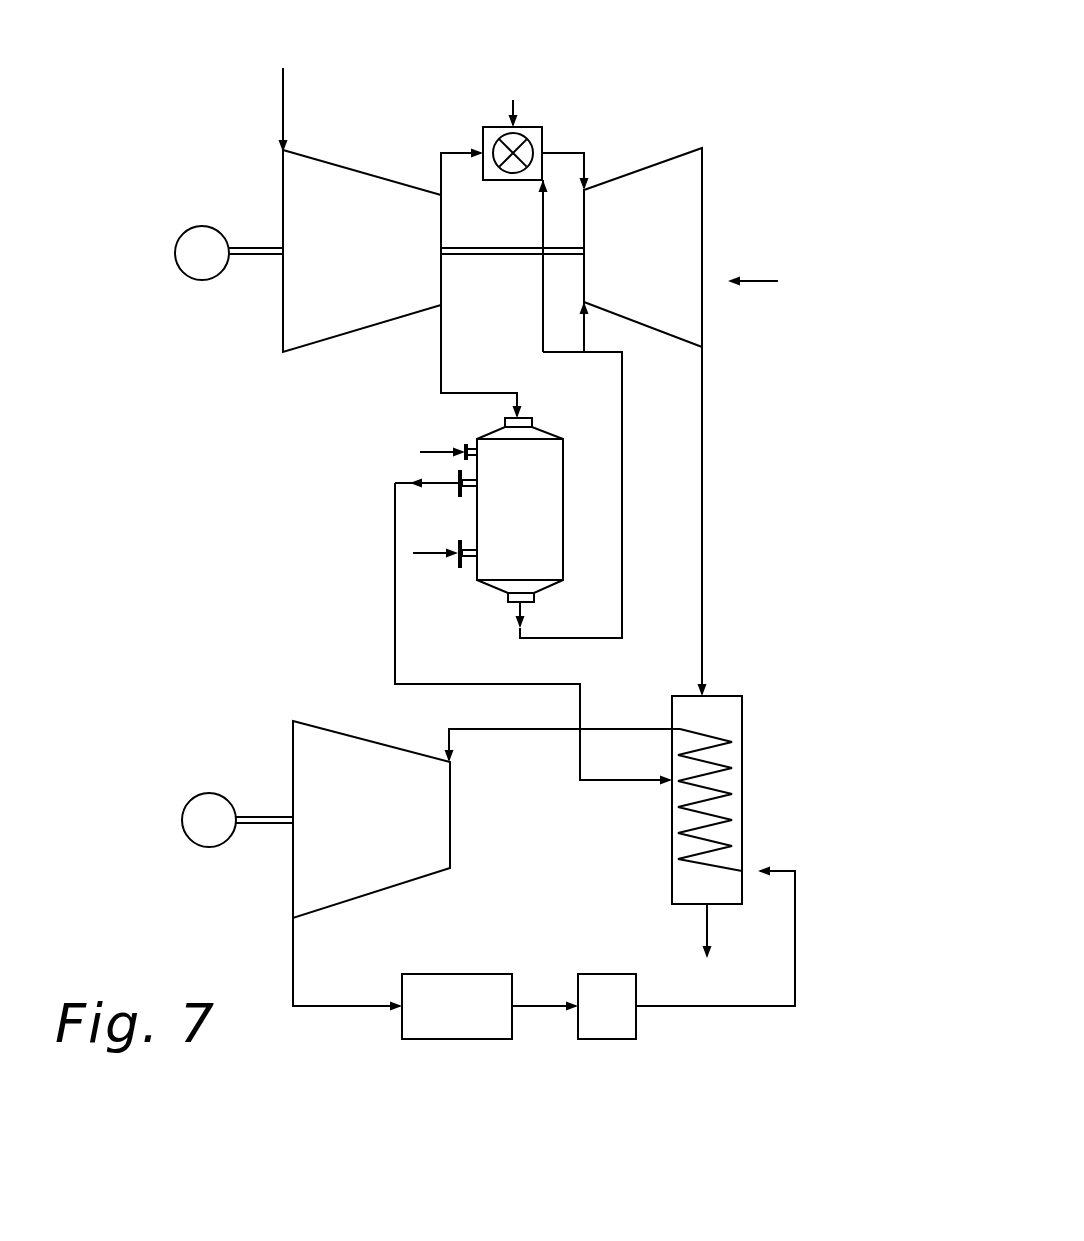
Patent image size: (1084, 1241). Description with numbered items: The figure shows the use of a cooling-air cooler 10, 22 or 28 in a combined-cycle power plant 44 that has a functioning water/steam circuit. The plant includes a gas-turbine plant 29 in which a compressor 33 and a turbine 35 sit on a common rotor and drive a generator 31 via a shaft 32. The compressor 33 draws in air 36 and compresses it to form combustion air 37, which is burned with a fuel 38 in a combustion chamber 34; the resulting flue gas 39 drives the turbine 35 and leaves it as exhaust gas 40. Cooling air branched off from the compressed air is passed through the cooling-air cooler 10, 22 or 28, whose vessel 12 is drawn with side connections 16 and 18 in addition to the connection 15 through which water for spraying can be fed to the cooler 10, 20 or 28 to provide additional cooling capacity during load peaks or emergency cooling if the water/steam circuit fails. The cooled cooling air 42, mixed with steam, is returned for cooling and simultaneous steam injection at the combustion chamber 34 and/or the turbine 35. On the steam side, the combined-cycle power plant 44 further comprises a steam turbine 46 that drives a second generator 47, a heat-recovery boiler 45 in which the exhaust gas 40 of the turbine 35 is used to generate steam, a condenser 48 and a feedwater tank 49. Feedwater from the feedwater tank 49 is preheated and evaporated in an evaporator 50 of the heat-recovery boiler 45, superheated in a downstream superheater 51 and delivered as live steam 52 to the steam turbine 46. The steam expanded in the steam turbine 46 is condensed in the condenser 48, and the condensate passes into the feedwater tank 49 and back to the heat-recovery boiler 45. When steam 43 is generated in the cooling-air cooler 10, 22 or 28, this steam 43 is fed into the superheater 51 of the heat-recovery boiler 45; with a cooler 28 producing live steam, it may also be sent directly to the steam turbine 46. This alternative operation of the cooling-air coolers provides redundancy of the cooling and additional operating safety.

The cooling-air cooler 10 is at (693, 509).
The reactor vessel 12 is at (532, 418).
The connection 15 is at (463, 446).
The outlet connection 16 is at (456, 471).
The inlet connection 18 is at (458, 566).
The cooling-air cooler 20 is at (508, 598).
The cooling-air cooler 22 is at (693, 509).
The cooling-air cooler 28 is at (543, 535).
The gas-turbine plant 29 is at (780, 282).
The generator 31 is at (192, 252).
The shaft 32 is at (258, 258).
The compressor 33 is at (358, 192).
The combustion chamber 34 is at (545, 130).
The turbine 35 is at (678, 190).
The air 36 is at (283, 106).
The combustion air 37 is at (479, 152).
The fuel 38 is at (513, 100).
The flue gas 39 is at (585, 167).
The exhaust gas 40 is at (702, 622).
The cooled cooling air 42 is at (622, 447).
The steam 43 is at (612, 786).
The combined-cycle power plant 44 is at (262, 575).
The heat-recovery boiler 45 is at (742, 815).
The steam turbine 46 is at (320, 760).
The second generator 47 is at (211, 811).
The condenser 48 is at (432, 1030).
The feedwater tank 49 is at (615, 1030).
The evaporator 50 is at (742, 853).
The superheater 51 is at (740, 766).
The live steam 52 is at (518, 734).